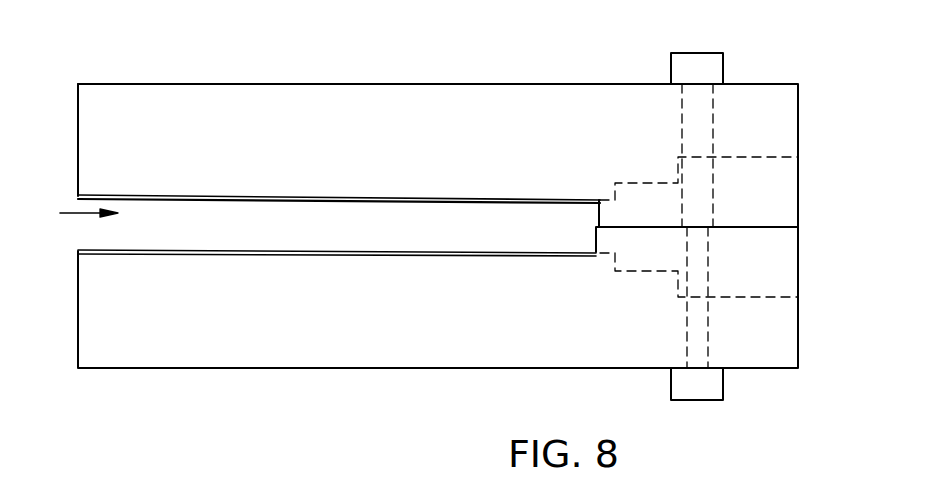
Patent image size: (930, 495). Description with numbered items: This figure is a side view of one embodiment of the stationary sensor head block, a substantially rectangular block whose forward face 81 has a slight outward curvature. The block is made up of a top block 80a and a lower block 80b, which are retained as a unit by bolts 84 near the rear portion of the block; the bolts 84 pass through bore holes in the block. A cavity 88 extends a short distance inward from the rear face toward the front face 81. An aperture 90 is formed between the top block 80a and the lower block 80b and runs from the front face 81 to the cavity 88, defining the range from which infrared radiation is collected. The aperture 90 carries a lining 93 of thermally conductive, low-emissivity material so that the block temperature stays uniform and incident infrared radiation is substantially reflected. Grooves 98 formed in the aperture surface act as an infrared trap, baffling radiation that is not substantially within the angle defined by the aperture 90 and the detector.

The top block 80a is at (503, 100).
The lower block 80b is at (444, 356).
The forward face 81 is at (78, 154).
The bolts 84 is at (702, 66).
The cavity 88 is at (782, 182).
The aperture 90 is at (74, 213).
The lining 93 is at (430, 200).
The grooves 98 is at (309, 201).